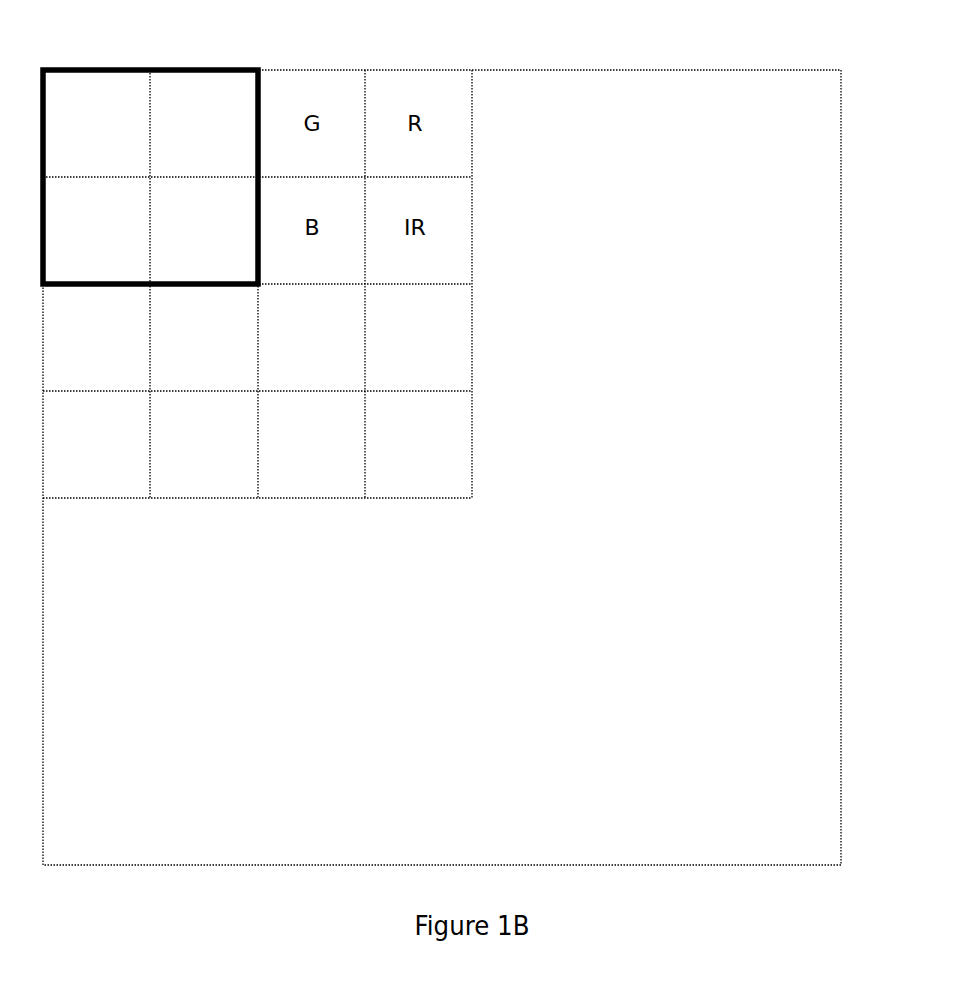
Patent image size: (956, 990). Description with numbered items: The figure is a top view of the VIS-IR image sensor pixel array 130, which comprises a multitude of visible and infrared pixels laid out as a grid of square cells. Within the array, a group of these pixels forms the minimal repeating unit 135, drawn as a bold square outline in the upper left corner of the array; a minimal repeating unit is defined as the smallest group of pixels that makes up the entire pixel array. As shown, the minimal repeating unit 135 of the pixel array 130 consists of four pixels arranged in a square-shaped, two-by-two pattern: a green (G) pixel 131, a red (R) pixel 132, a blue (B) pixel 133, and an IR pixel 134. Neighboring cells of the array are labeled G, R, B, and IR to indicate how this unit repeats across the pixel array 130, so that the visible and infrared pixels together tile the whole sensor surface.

The VIS-IR image sensor pixel array 130 is at (442, 467).
The green (G) pixel 131 is at (98, 125).
The red (R) pixel 132 is at (202, 125).
The blue (B) pixel 133 is at (98, 229).
The IR pixel 134 is at (202, 229).
The minimal repeating unit 135 is at (198, 68).